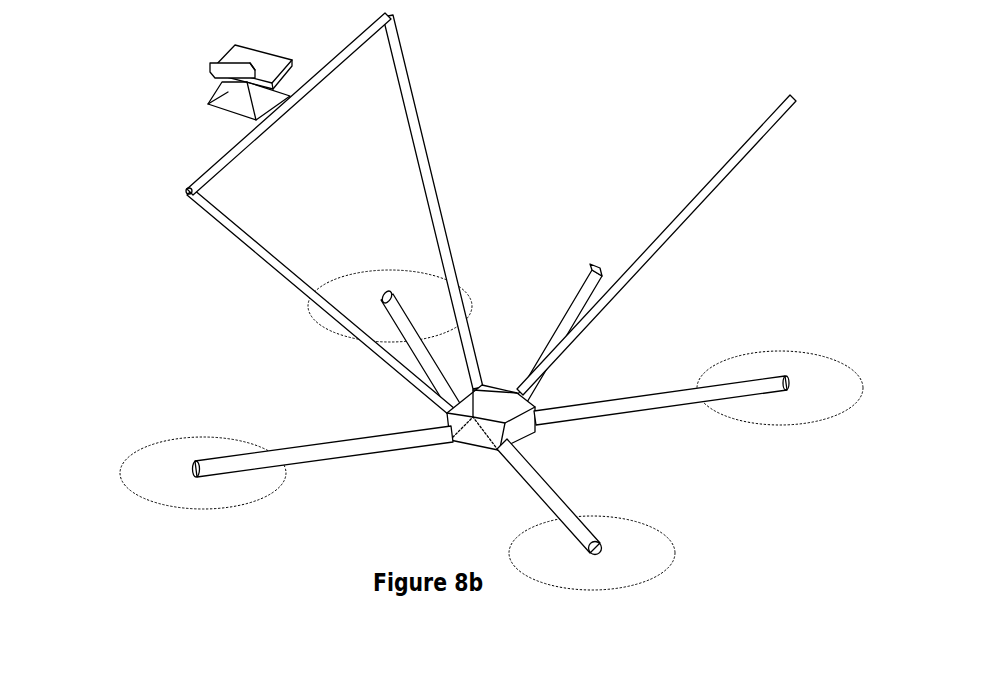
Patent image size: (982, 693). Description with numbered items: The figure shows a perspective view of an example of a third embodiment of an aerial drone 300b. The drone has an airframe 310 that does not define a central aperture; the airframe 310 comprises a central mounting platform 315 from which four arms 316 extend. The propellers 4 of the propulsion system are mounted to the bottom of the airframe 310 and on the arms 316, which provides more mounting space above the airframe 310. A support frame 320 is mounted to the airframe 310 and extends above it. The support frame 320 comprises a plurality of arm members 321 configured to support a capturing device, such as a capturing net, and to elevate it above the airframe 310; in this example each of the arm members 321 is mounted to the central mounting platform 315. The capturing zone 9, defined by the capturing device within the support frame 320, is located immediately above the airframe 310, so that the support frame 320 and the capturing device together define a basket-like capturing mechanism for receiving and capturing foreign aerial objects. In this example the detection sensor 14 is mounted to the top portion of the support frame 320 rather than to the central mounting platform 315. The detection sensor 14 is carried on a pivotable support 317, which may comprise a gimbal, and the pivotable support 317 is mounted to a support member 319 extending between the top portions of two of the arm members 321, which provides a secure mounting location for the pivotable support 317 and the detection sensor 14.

The detection sensor 14 is at (212, 64).
The pivotable support 317 is at (237, 106).
The support member 319 is at (380, 50).
The arm members 321 is at (763, 125).
The support frame 320 is at (266, 276).
The capturing zone 9 is at (513, 253).
The aerial drone 300b is at (764, 322).
The airframe 310 is at (559, 440).
The central mounting platform 315 is at (478, 443).
The arms 316 is at (347, 440).
The propellers 4 is at (633, 545).